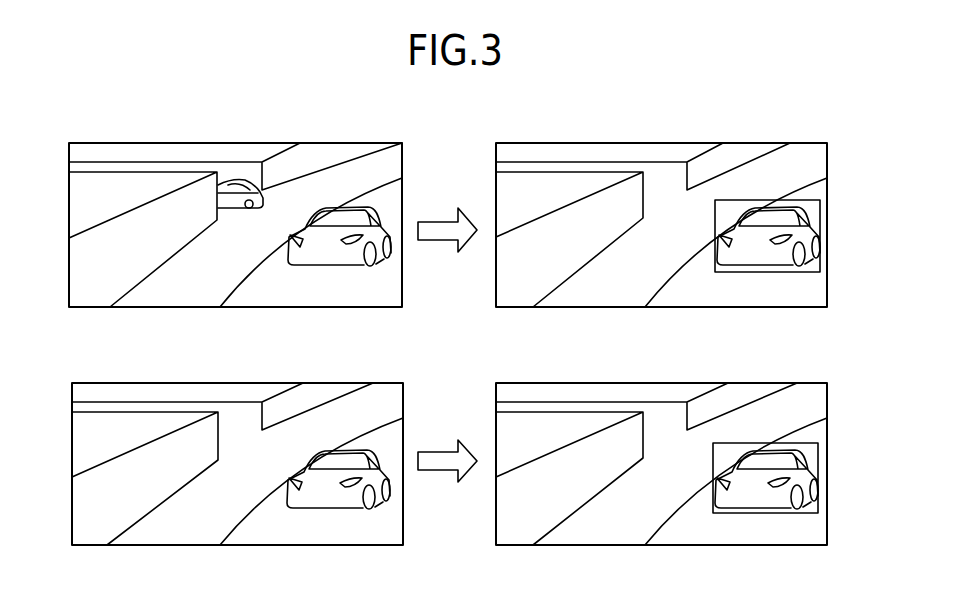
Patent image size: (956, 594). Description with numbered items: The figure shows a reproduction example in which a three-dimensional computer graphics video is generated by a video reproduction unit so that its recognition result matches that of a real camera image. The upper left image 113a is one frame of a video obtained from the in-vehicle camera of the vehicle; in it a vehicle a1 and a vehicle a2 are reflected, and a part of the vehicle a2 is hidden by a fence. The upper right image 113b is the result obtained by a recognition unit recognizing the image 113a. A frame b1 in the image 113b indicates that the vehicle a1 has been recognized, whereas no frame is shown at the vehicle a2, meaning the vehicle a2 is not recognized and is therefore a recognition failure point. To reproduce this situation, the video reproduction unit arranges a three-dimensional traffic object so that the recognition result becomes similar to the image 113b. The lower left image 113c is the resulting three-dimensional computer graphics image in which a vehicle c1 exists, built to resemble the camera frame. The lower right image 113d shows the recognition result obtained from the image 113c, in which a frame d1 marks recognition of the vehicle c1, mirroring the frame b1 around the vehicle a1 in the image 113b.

The frame of a video obtained from the in-vehicle camera 113a is at (222, 143).
The recognition result 113b is at (650, 143).
The three-dimensional computer graphics image 113c is at (223, 383).
The recognition result of the three-dimensional computer graphics image 113d is at (652, 383).
The vehicle a1 is at (327, 270).
The vehicle a2 is at (223, 208).
The frame b1 is at (725, 200).
The vehicle c1 is at (327, 513).
The frame d1 is at (728, 443).